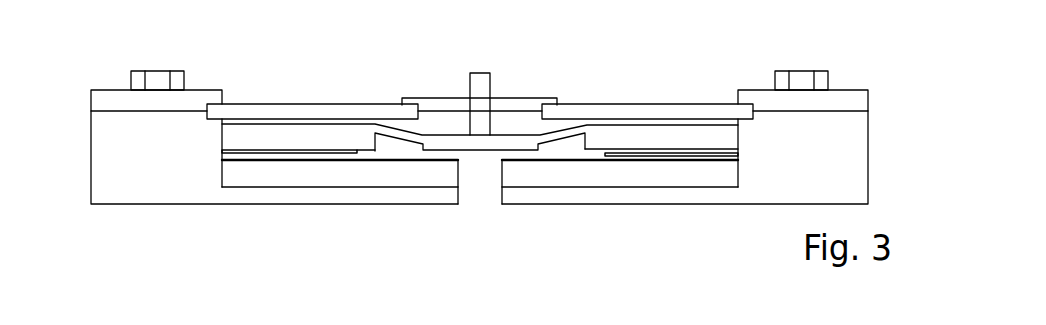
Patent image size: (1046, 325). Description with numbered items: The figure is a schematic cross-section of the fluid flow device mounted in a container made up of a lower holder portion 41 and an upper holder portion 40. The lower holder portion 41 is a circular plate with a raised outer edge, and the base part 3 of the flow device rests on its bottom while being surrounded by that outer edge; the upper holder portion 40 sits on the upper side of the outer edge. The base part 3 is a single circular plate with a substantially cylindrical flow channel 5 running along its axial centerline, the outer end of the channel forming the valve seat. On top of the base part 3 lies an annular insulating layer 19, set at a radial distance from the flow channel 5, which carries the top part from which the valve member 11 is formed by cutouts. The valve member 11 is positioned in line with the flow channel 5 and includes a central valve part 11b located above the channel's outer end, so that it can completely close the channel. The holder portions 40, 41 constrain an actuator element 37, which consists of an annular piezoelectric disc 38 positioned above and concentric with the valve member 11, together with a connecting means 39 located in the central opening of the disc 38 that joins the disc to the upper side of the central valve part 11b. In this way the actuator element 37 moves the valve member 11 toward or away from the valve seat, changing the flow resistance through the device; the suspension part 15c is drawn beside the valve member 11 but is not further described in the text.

The base block 3 is at (300, 163).
The slot / opening 5 is at (478, 168).
The trough-shaped carrier 11 is at (443, 145).
The right holding bar 11b is at (507, 140).
The upper sheet element 15c is at (552, 132).
The thin layer strip 19 is at (236, 155).
The pin 37 is at (478, 81).
The left holding bar 38 is at (372, 108).
The center plate 39 is at (450, 110).
The clamping plate 40 is at (115, 98).
The frame body 41 is at (125, 180).